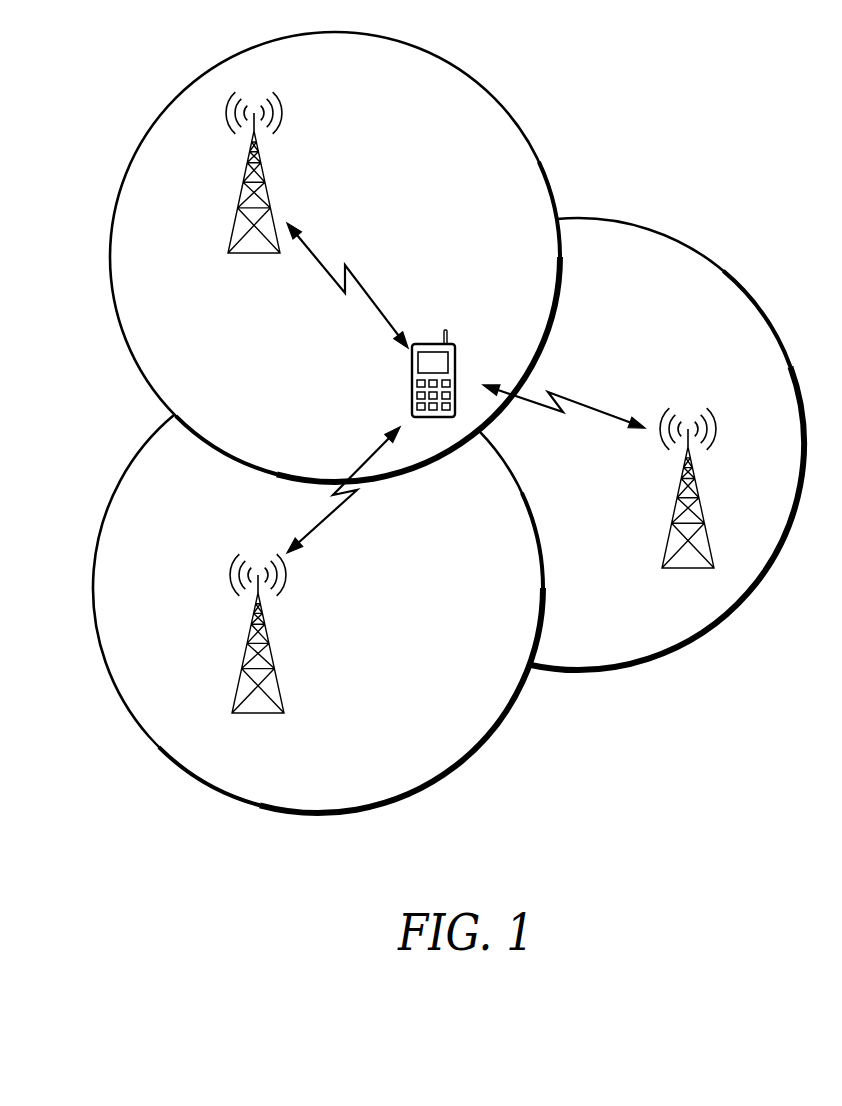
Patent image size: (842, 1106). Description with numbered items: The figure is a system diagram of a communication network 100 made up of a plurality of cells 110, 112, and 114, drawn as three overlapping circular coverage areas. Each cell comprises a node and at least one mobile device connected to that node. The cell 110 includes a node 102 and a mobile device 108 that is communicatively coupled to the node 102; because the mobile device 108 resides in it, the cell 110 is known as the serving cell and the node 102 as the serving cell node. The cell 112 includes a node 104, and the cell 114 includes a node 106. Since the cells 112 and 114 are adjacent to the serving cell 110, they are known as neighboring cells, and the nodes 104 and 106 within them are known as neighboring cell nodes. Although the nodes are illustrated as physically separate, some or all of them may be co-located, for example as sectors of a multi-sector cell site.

The communication network 100 is at (660, 843).
The node 102 is at (243, 193).
The node 104 is at (676, 506).
The node 106 is at (247, 655).
The mobile device 108 is at (411, 378).
The cell 110 is at (421, 48).
The cell 112 is at (664, 234).
The cell 114 is at (93, 593).